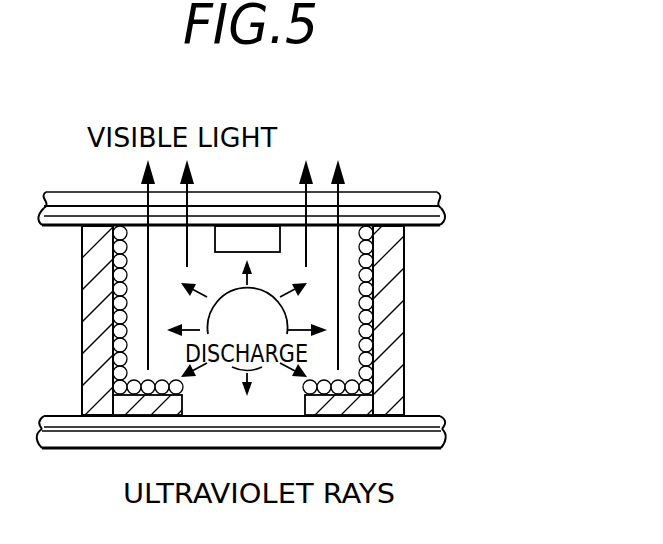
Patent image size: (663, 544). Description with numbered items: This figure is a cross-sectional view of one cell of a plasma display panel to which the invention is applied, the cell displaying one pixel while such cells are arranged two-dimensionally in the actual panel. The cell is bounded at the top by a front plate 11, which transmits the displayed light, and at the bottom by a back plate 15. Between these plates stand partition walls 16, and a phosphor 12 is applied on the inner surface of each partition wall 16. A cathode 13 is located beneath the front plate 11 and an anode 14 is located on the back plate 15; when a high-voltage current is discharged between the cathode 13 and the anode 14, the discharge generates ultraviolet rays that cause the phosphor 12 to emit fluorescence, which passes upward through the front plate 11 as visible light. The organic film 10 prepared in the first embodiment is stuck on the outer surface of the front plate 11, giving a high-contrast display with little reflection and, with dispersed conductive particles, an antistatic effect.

The organic film 10 is at (405, 199).
The front plate 11 is at (425, 218).
The phosphor 12 is at (378, 285).
The cathode 13 is at (258, 240).
The anode 14 is at (428, 422).
The back plate 15 is at (405, 442).
The partition wall 16 is at (395, 352).